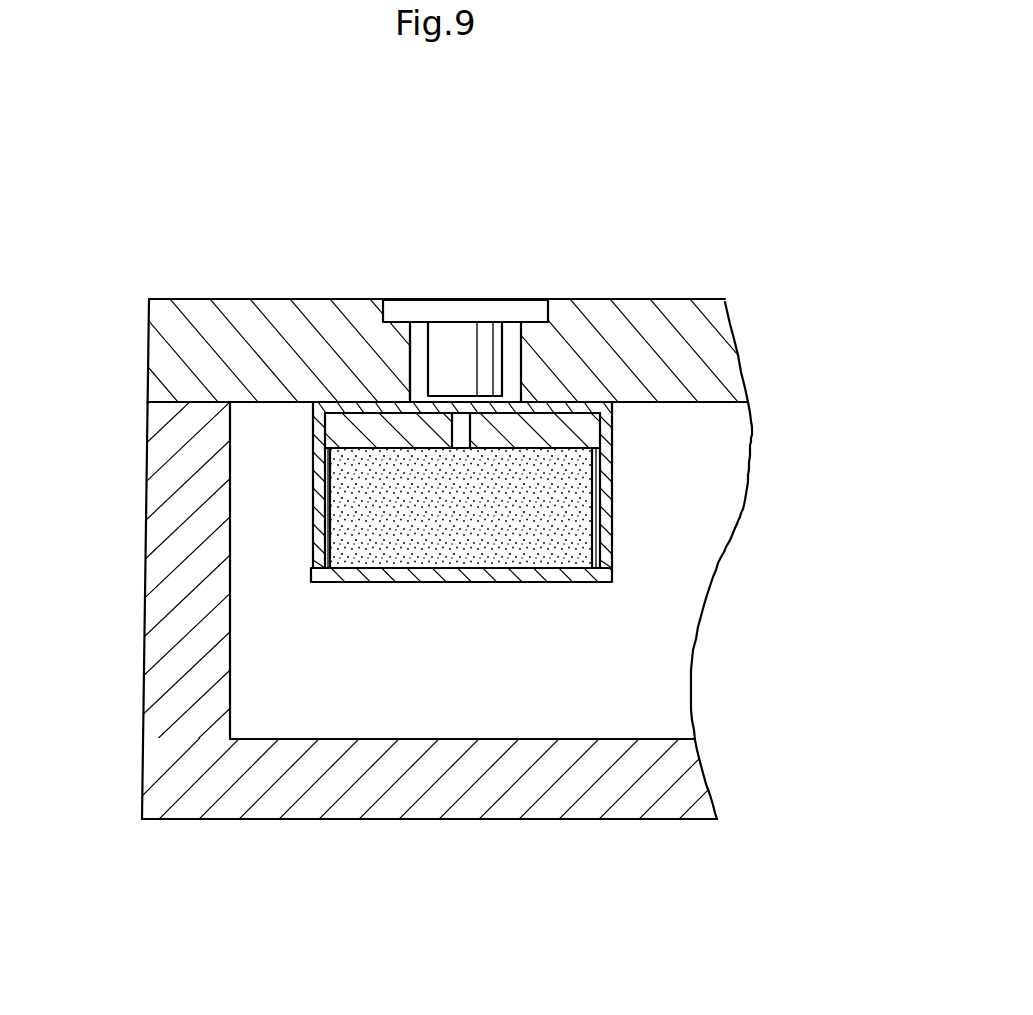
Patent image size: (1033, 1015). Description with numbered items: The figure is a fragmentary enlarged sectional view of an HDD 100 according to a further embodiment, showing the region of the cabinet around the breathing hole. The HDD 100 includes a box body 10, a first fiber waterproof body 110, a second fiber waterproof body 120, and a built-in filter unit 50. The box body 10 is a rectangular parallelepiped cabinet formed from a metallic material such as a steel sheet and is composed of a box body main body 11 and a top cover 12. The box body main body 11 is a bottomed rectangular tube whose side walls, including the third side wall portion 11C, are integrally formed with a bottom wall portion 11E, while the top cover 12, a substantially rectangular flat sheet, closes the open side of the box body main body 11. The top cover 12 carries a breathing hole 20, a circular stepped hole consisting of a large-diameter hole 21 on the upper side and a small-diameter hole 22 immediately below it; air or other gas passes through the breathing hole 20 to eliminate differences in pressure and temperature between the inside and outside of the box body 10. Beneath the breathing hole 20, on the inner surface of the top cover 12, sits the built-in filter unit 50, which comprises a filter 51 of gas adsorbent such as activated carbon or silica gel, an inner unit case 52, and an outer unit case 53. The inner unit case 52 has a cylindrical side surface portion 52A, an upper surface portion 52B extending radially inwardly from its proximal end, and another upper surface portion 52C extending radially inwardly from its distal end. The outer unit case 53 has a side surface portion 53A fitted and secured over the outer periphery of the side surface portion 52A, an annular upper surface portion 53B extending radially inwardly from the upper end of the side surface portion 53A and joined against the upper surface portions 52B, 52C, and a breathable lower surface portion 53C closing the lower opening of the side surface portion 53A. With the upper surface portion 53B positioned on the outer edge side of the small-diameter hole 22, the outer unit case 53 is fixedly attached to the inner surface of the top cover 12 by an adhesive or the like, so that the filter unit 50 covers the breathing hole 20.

The HDD 100 is at (692, 202).
The box body 10 is at (162, 298).
The box body main body 11 is at (212, 819).
The third side wall portion 11C is at (163, 504).
The bottom wall portion 11E is at (584, 805).
The top cover 12 is at (231, 313).
The breathing hole 20 is at (517, 360).
The large-diameter hole 21 is at (506, 346).
The small-diameter hole 22 is at (412, 350).
The first fiber waterproof body 110 is at (468, 313).
The second fiber waterproof body 120 is at (443, 336).
The built-in filter unit 50 is at (612, 473).
The filter 51 is at (337, 463).
The inner unit case 52 is at (612, 537).
The side surface portion 52A is at (612, 440).
The upper surface portion 52B is at (315, 403).
The upper surface portion 52C is at (612, 402).
The outer unit case 53 is at (312, 498).
The side surface portion 53A is at (312, 530).
The annular upper surface portion 53B is at (578, 426).
The lower surface portion 53C is at (418, 580).